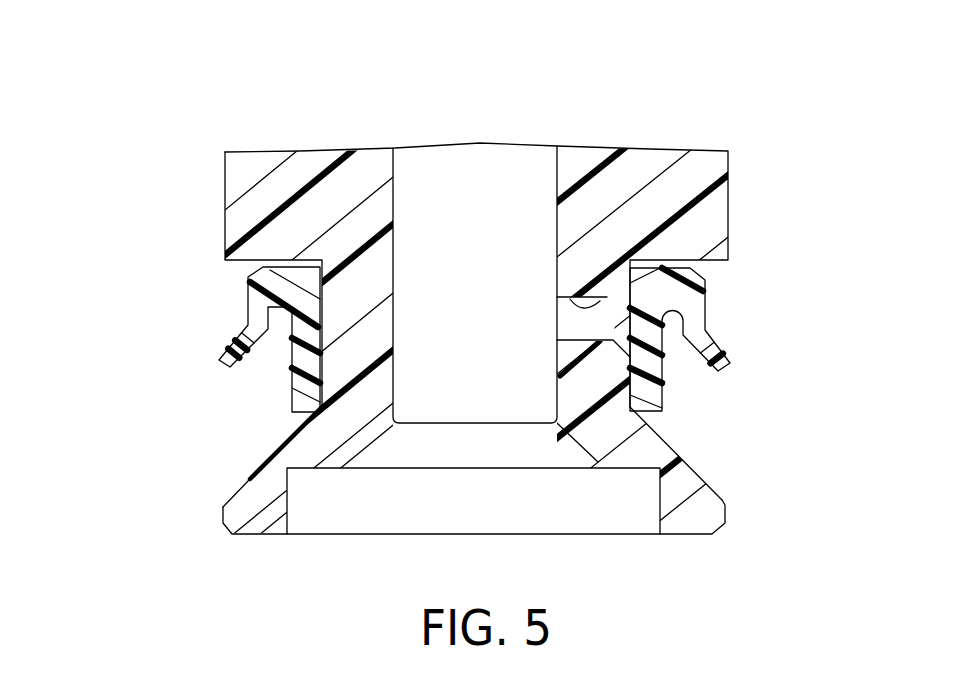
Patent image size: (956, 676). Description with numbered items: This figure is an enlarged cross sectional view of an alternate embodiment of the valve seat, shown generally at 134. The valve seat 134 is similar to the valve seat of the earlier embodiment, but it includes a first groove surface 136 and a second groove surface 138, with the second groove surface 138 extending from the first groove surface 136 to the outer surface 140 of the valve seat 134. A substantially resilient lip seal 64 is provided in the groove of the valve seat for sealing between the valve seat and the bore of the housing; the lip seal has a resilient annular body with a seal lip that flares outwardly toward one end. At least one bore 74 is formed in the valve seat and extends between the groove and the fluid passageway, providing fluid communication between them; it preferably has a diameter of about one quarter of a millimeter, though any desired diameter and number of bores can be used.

The valve seat 134 is at (258, 98).
The bore 74 is at (650, 259).
The lip seal 64 is at (722, 282).
The first groove surface 136 is at (320, 316).
The second groove surface 138 is at (272, 455).
The outer surface 140 is at (222, 516).